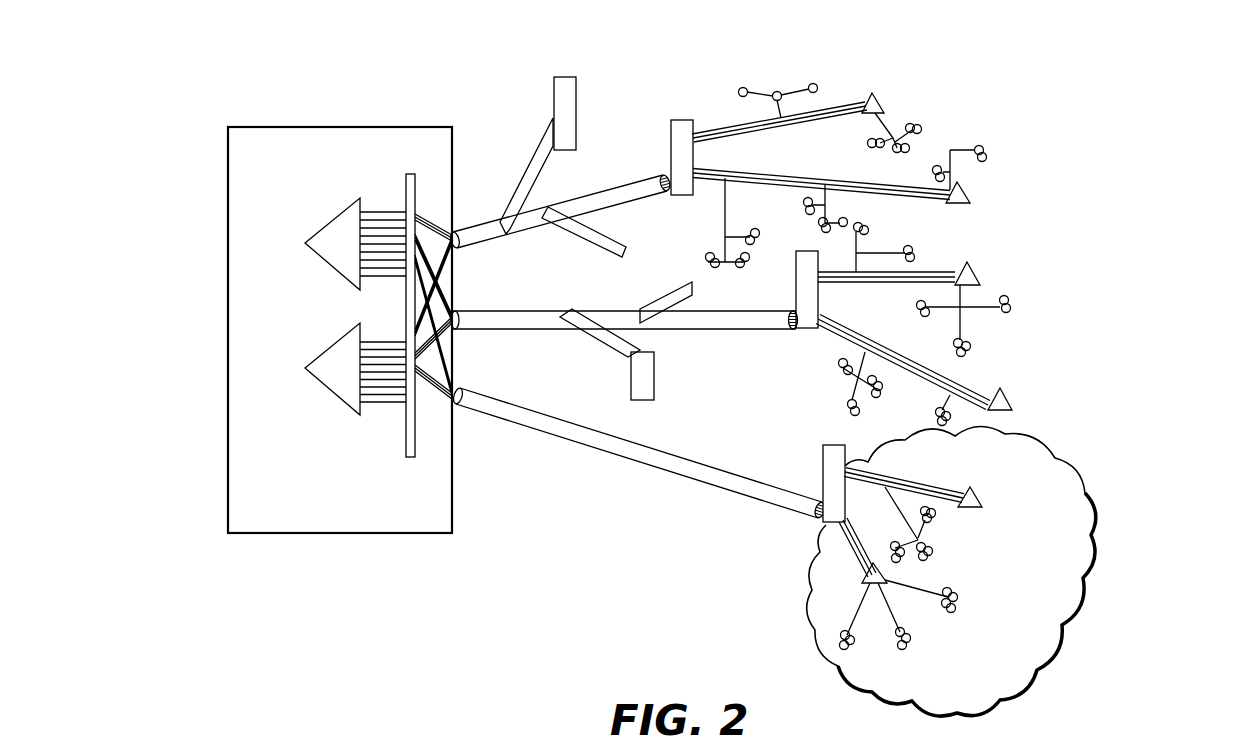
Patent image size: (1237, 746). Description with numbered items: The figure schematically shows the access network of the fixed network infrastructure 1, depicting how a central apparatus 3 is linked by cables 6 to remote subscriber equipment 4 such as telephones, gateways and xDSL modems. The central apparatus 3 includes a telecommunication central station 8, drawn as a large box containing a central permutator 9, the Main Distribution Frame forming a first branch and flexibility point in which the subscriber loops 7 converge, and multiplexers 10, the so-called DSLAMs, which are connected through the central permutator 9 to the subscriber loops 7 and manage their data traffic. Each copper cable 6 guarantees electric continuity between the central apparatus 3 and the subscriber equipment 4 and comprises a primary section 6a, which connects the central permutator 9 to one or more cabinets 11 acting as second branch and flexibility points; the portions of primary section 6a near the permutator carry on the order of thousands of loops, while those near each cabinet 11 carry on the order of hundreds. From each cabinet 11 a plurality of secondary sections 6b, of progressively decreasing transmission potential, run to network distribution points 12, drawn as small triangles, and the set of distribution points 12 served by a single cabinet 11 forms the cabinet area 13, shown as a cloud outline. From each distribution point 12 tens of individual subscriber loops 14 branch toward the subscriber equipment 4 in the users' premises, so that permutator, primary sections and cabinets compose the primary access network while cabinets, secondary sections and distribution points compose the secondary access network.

The fixed network infrastructure 1 is at (572, 88).
The central apparatus 3 is at (694, 62).
The subscriber equipment 4 is at (750, 90).
The cable 6 is at (622, 490).
The primary section 6a is at (595, 196).
The secondary section 6b is at (843, 107).
The subscriber loops 7 is at (455, 368).
The telecommunication central station 8 is at (384, 127).
The central permutator 9 is at (412, 455).
The multiplexer 10 is at (338, 262).
The cabinet 11 is at (808, 320).
The distribution point 12 is at (980, 272).
The cabinet area 13 is at (820, 588).
The subscriber loops 14 is at (882, 120).